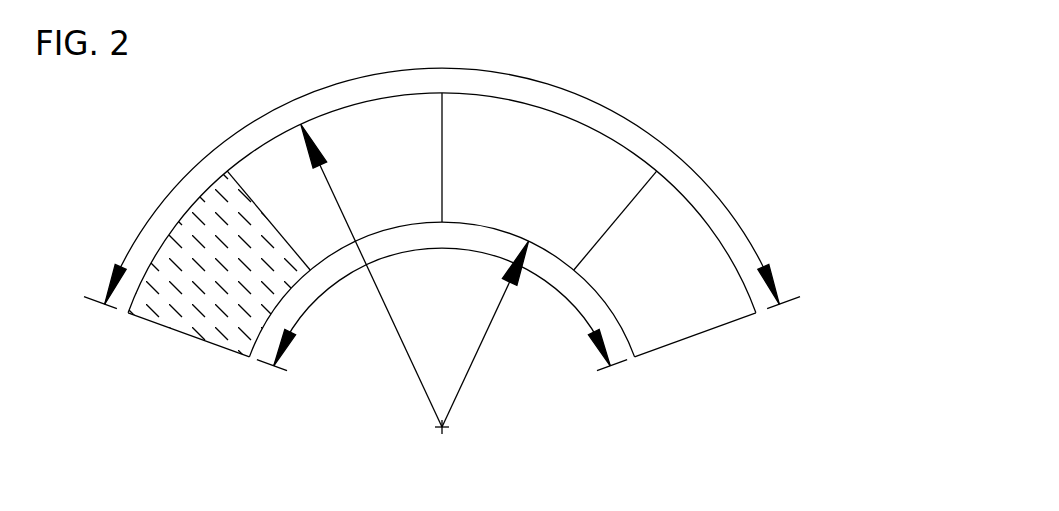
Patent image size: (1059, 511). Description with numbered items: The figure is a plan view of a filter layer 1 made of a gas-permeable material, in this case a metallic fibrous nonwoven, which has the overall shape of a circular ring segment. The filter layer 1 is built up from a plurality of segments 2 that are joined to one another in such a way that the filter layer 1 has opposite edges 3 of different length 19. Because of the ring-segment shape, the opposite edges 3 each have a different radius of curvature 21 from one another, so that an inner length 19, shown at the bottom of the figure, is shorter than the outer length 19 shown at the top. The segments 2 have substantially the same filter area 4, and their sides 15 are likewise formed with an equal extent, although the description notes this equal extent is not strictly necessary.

The filter layer 1 is at (803, 122).
The segment 2 is at (401, 165).
The edge 3 is at (620, 315).
The filter area 4 is at (192, 209).
The side 15 is at (190, 335).
The length 19 is at (207, 153).
The radius of curvature 21 is at (503, 297).